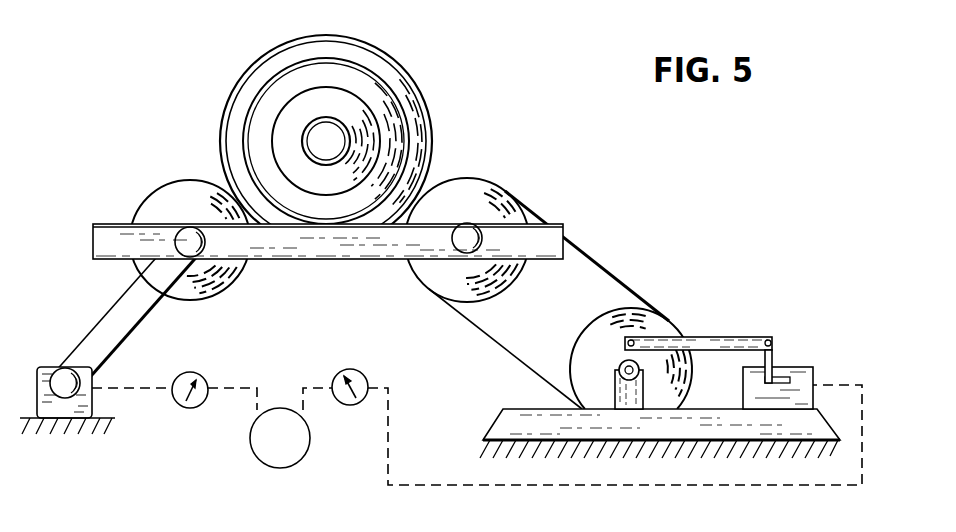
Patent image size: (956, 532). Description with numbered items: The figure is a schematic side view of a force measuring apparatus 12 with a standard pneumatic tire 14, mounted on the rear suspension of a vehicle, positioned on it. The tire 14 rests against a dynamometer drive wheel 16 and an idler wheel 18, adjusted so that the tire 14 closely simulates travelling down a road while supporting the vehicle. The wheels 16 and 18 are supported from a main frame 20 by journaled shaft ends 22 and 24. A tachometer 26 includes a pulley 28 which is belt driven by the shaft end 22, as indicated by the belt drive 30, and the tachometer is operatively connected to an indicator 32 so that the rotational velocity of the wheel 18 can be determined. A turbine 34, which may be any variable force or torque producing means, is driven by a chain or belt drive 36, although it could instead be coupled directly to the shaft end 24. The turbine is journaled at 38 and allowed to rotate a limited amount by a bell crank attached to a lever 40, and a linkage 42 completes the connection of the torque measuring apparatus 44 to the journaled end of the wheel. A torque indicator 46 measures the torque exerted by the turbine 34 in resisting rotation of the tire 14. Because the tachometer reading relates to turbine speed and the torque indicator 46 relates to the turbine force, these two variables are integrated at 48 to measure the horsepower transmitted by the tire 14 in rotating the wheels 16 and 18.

The force measuring apparatus 12 is at (553, 137).
The pneumatic tire 14 is at (430, 96).
The dynamometer drive wheel 16 is at (470, 171).
The idler wheel 18 is at (170, 182).
The main frame 20 is at (564, 224).
The journaled shaft end 22 is at (206, 242).
The journaled shaft end 24 is at (483, 238).
The tachometer 26 is at (40, 367).
The pulley 28 is at (62, 398).
The belt drive 30 is at (123, 340).
The indicator 32 is at (173, 392).
The turbine 34 is at (662, 326).
The chain or belt drive 36 is at (590, 254).
The journal 38 is at (619, 364).
The lever 40 is at (740, 337).
The linkage 42 is at (775, 353).
The torque measuring apparatus 44 is at (813, 367).
The torque indicator 46 is at (360, 371).
The integrator (horsepower) 48 is at (283, 468).